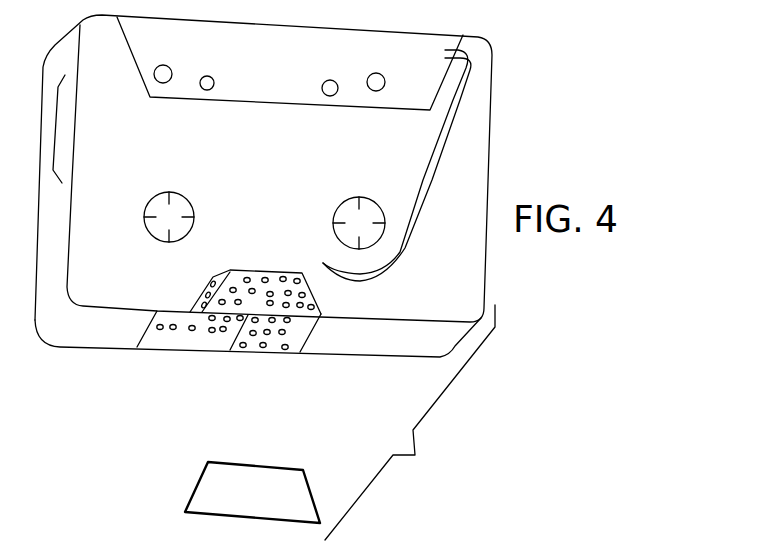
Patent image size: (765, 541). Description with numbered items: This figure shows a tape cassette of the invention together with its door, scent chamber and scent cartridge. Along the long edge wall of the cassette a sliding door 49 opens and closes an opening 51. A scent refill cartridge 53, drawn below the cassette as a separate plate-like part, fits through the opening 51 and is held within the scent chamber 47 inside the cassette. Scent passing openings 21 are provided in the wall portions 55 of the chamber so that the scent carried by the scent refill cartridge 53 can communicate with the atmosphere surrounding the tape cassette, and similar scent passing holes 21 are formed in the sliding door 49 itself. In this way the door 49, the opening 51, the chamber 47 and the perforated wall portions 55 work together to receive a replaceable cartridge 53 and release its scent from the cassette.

The scent passing openings 21 is at (290, 350).
The scent chamber 47 is at (322, 310).
The sliding door 49 is at (158, 340).
The opening 51 is at (268, 350).
The scent refill cartridge 53 is at (198, 488).
The wall portions 55 is at (242, 278).